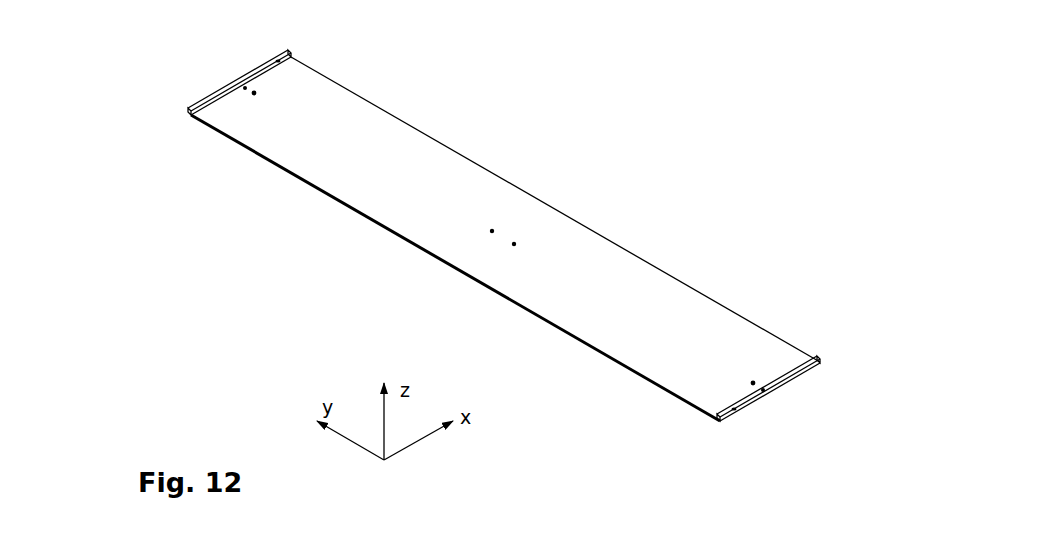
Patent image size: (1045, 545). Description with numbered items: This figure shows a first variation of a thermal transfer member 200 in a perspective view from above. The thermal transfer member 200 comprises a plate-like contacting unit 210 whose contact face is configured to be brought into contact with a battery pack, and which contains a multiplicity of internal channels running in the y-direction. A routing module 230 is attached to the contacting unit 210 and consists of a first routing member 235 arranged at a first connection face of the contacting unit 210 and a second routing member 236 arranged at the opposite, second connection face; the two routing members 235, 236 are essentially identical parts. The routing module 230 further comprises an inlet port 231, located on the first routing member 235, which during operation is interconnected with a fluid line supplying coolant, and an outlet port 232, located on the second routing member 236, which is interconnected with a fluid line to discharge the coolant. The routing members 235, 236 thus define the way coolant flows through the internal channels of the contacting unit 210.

The thermal transfer member 200 is at (491, 248).
The contacting unit 210 is at (397, 236).
The routing module 230 is at (491, 248).
The inlet port 231 is at (278, 61).
The outlet port 232 is at (793, 435).
The first routing member 235 is at (166, 105).
The second routing member 236 is at (829, 353).